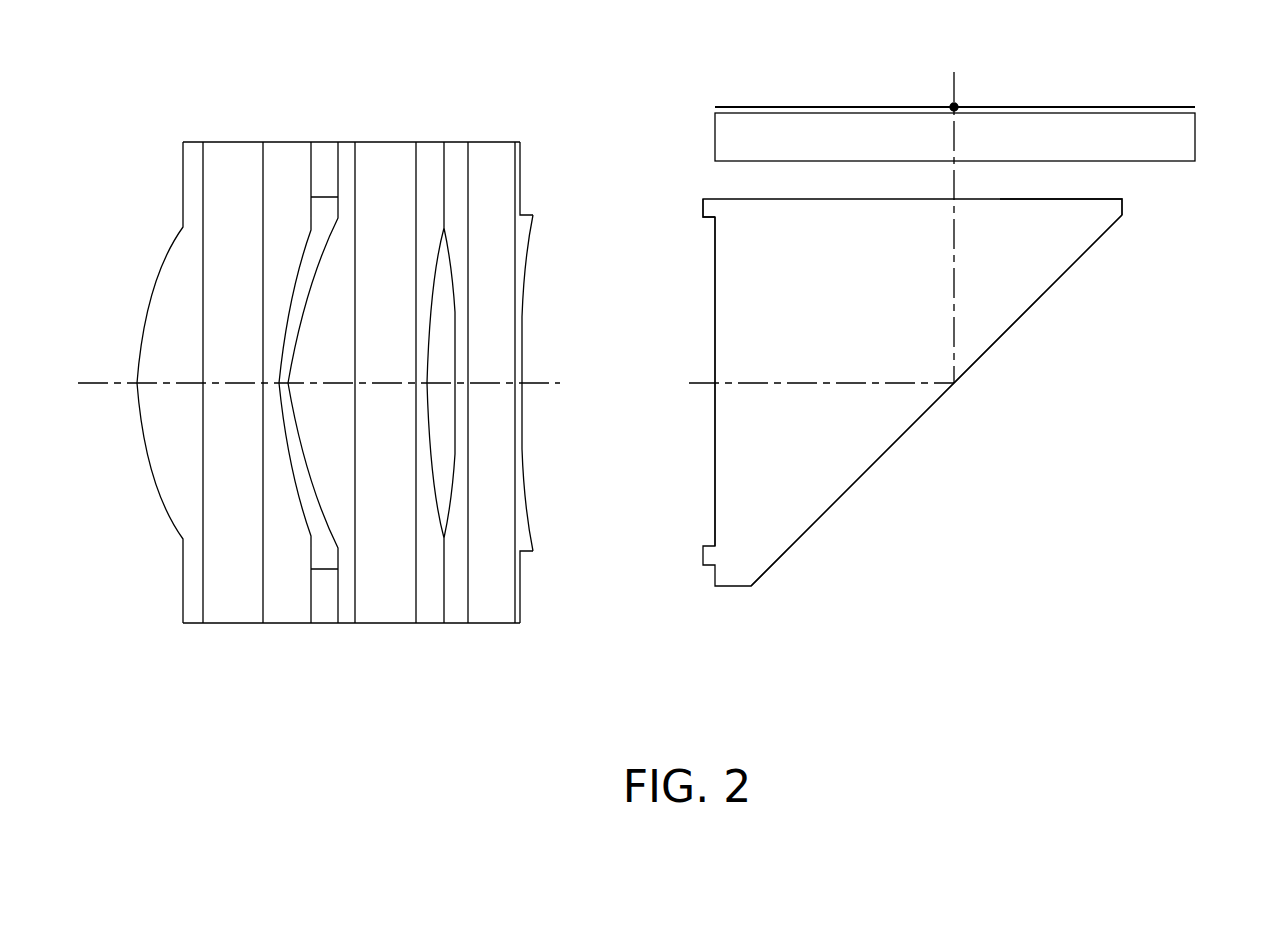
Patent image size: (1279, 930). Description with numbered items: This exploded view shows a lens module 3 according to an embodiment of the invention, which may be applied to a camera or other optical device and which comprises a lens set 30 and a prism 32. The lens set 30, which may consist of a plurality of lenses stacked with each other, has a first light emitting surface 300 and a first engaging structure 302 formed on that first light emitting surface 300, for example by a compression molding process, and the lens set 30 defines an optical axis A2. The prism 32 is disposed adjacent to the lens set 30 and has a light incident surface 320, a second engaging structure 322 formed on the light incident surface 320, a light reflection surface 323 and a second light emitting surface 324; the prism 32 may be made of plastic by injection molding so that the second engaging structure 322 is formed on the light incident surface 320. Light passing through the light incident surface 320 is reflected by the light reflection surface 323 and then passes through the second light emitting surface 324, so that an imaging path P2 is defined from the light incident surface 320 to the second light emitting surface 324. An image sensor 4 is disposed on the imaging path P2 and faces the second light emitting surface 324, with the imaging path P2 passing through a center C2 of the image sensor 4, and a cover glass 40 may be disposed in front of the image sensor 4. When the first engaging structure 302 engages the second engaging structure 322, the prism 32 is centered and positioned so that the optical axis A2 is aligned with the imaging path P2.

The lens module 3 is at (577, 632).
The lens set 30 is at (490, 142).
The first light emitting surface 300 is at (522, 165).
The first engaging structure 302 is at (533, 222).
The optical axis A2 is at (85, 381).
The prism 32 is at (1012, 300).
The light incident surface 320 is at (715, 283).
The second engaging structure 322 is at (703, 208).
The light reflection surface 323 is at (905, 432).
The second light emitting surface 324 is at (1065, 200).
The imaging path P2 is at (822, 382).
The center C2 is at (958, 106).
The image sensor 4 is at (1163, 107).
The cover glass 40 is at (1196, 130).